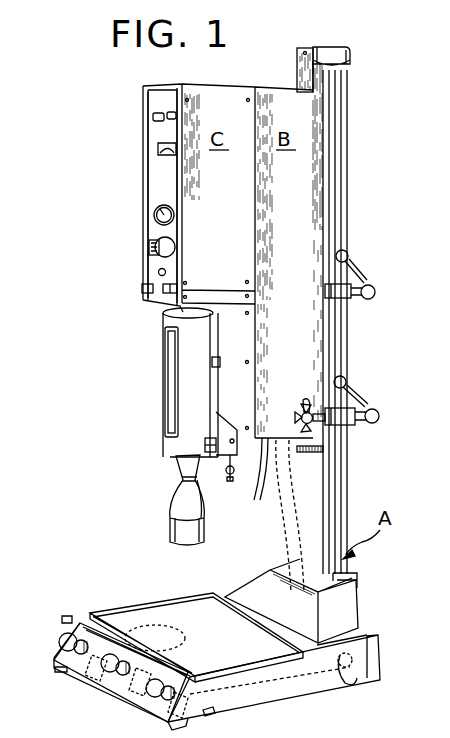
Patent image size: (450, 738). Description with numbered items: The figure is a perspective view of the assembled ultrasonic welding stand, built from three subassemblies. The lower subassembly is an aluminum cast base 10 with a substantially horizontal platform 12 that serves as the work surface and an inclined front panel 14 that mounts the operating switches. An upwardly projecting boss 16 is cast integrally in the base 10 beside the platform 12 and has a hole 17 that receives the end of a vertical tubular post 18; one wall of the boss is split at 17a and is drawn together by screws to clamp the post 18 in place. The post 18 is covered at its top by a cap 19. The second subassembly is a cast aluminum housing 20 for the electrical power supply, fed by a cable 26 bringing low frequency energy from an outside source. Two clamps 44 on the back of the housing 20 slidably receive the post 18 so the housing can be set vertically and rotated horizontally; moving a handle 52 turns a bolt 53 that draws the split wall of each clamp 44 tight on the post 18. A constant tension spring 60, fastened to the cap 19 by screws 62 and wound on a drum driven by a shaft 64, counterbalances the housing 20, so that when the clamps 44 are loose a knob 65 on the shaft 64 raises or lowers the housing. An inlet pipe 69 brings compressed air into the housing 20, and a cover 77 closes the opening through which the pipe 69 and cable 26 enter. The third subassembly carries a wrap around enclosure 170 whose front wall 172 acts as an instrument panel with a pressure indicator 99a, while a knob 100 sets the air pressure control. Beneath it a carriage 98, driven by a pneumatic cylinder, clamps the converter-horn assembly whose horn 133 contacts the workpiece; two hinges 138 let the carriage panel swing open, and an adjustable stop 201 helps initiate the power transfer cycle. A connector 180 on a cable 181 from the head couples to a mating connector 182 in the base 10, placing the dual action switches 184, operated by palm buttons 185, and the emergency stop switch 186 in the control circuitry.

The base 10 is at (262, 700).
The platform 12 is at (185, 603).
The inclined front panel 14 is at (128, 692).
The boss 16 is at (346, 612).
The hole 17 is at (272, 566).
The split 17a is at (350, 572).
The post 18 is at (324, 483).
The cap 19 is at (350, 62).
The housing 20 is at (313, 158).
The cable 26 is at (237, 432).
The clamp 44 is at (343, 300).
The handle 52 is at (347, 252).
The bolt 53 is at (374, 288).
The constant tension spring 60 is at (300, 78).
The screws 62 is at (297, 55).
The shaft 64 is at (298, 414).
The knob 65 is at (303, 398).
The inlet pipe 69 is at (254, 492).
The cover 77 is at (306, 454).
The carriage 98 is at (160, 383).
The pressure indicator 99a is at (166, 205).
The knob 100 is at (150, 248).
The horn 133 is at (180, 520).
The hinges 138 is at (205, 447).
The wrap around enclosure 170 is at (133, 149).
The front wall 172 is at (157, 183).
The connector 180 is at (352, 661).
The cable 181 is at (291, 531).
The mating connector 182 is at (357, 681).
The dual action switches 184 is at (70, 615).
The palm buttons 185 is at (62, 637).
The emergency stop switch 186 is at (103, 683).
The adjustable stop 201 is at (194, 481).